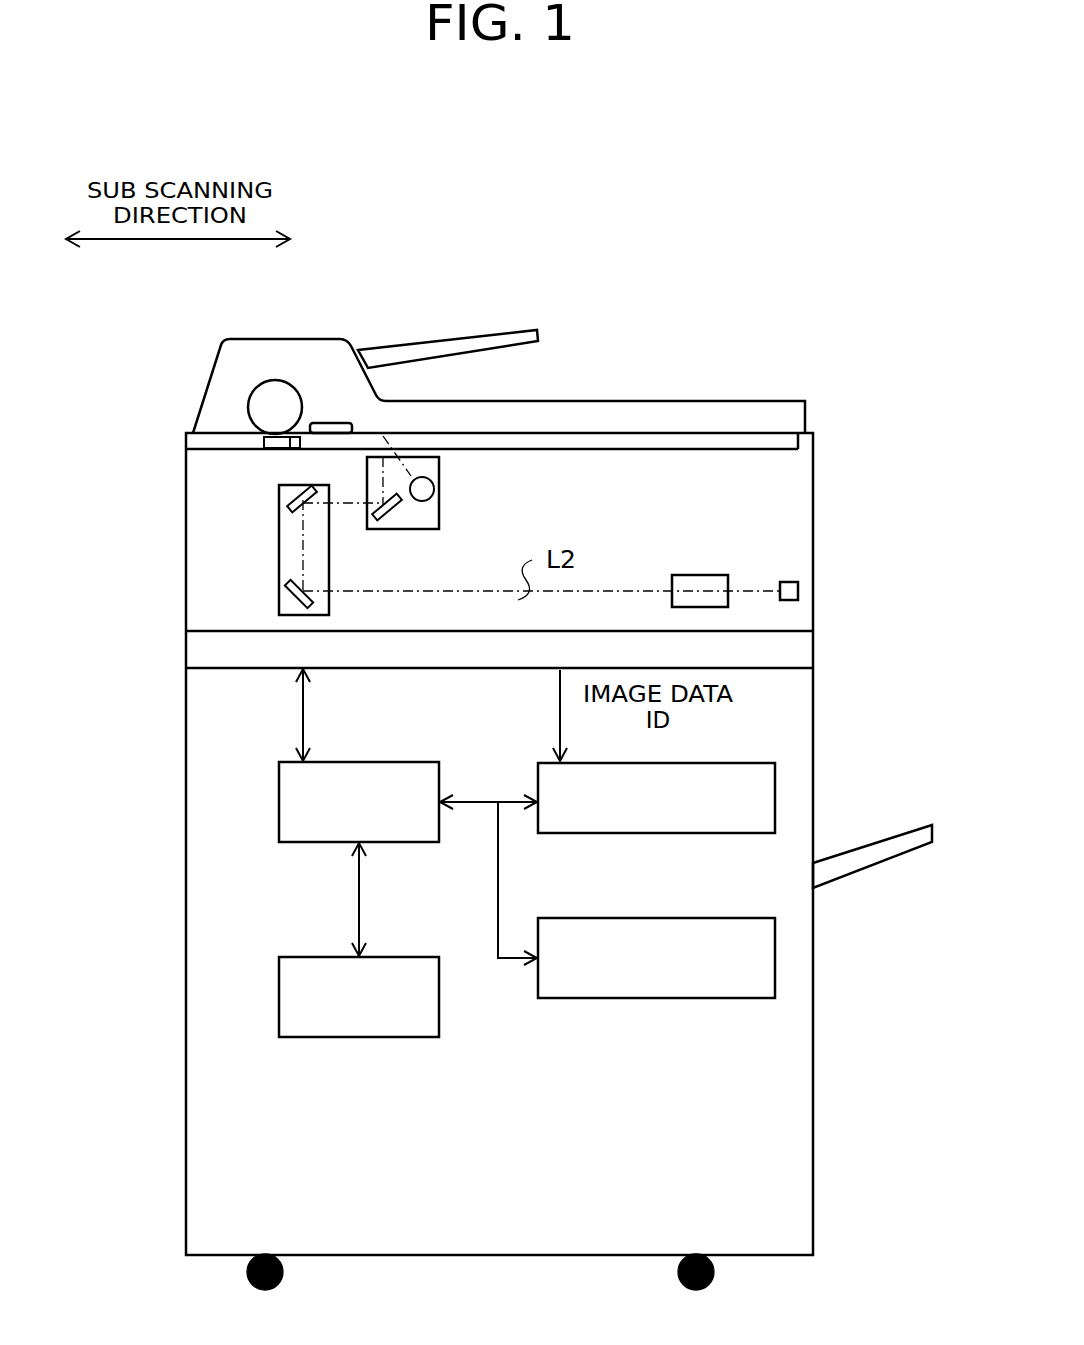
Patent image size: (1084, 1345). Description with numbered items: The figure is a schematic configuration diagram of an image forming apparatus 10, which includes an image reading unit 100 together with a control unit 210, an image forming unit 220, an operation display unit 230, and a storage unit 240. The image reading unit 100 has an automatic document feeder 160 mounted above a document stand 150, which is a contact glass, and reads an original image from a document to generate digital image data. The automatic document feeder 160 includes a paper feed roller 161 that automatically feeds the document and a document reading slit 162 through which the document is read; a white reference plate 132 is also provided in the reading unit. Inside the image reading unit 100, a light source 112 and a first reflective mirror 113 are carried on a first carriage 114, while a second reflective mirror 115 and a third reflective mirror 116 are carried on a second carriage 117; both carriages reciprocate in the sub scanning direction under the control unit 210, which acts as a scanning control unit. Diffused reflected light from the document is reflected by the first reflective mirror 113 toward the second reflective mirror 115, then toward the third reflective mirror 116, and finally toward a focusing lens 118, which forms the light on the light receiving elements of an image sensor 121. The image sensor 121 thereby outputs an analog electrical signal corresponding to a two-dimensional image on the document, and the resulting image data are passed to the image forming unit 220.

The image forming apparatus 10 is at (766, 280).
The image reading unit 100 is at (815, 520).
The document stand (contact glass) 150 is at (680, 425).
The automatic document feeder (ADF) 160 is at (283, 339).
The paper feed roller 161 is at (278, 380).
The white reference plate 132 is at (336, 423).
The document reading slit 162 is at (278, 450).
The light source 112 is at (440, 490).
The first reflective mirror 113 is at (388, 516).
The first carriage 114 is at (432, 498).
The second reflective mirror 115 is at (280, 498).
The third reflective mirror 116 is at (280, 590).
The second carriage 117 is at (279, 545).
The focusing lens 118 is at (672, 586).
The image sensor 121 is at (783, 580).
The control unit 210 is at (432, 762).
The image forming unit 220 is at (728, 763).
The operation display unit 230 is at (712, 918).
The storage unit 240 is at (412, 957).